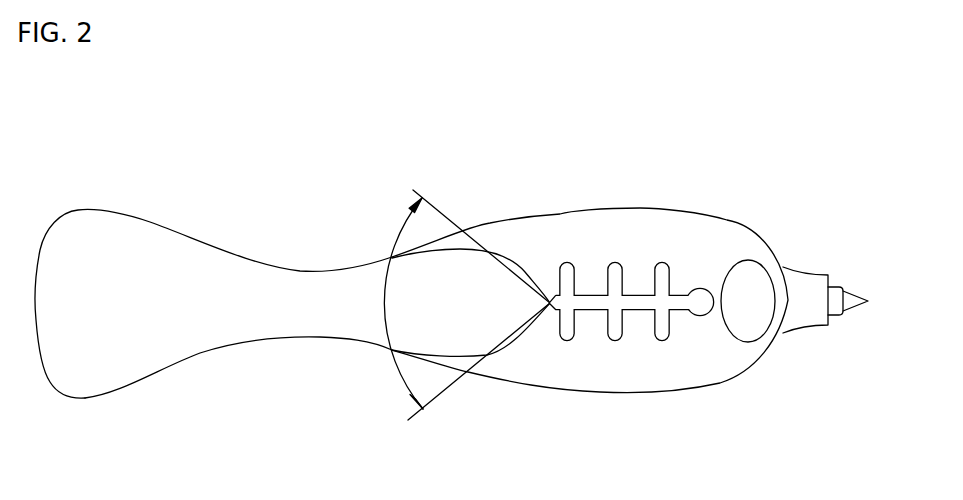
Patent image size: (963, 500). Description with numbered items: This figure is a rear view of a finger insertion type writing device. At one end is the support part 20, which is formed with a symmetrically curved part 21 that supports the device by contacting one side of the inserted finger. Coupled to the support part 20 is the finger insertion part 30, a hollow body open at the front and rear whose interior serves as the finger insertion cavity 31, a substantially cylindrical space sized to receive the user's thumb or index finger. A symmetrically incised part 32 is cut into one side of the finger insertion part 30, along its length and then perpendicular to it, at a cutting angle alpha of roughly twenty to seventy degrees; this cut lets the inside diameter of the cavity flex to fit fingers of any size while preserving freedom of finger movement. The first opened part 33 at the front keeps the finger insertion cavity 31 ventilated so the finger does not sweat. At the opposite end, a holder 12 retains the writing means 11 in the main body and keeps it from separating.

The support part 20 is at (83, 260).
The symmetrically curved part 21 is at (293, 332).
The finger insertion part 30 is at (672, 375).
The finger insertion cavity 31 is at (482, 320).
The symmetrically incised part 32 is at (658, 300).
The first opened part 33 is at (753, 292).
The holder 12 is at (808, 290).
The writing means 11 is at (837, 297).